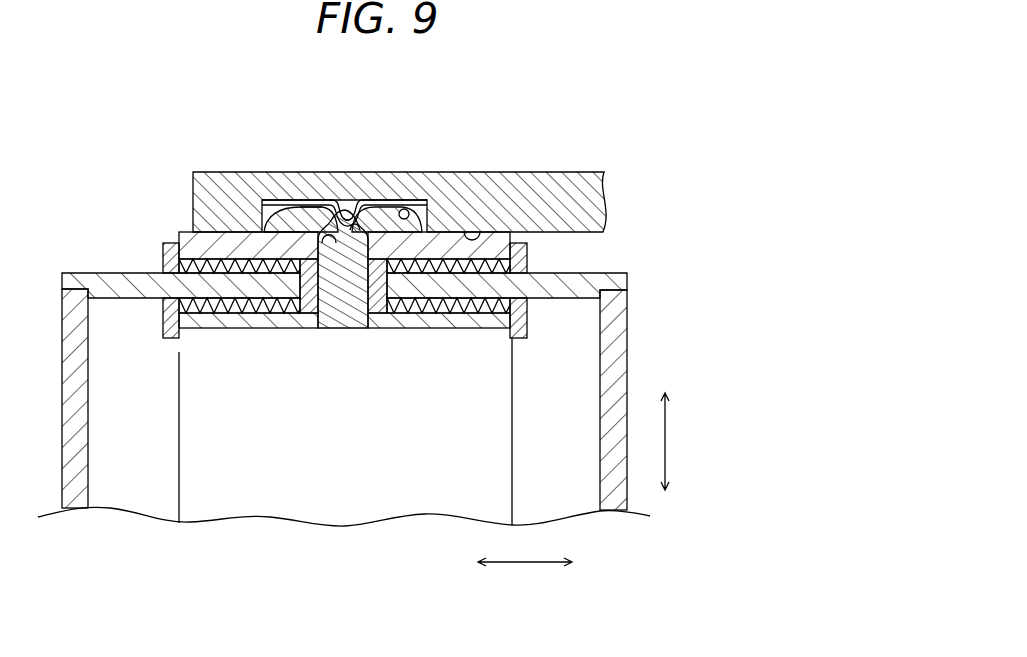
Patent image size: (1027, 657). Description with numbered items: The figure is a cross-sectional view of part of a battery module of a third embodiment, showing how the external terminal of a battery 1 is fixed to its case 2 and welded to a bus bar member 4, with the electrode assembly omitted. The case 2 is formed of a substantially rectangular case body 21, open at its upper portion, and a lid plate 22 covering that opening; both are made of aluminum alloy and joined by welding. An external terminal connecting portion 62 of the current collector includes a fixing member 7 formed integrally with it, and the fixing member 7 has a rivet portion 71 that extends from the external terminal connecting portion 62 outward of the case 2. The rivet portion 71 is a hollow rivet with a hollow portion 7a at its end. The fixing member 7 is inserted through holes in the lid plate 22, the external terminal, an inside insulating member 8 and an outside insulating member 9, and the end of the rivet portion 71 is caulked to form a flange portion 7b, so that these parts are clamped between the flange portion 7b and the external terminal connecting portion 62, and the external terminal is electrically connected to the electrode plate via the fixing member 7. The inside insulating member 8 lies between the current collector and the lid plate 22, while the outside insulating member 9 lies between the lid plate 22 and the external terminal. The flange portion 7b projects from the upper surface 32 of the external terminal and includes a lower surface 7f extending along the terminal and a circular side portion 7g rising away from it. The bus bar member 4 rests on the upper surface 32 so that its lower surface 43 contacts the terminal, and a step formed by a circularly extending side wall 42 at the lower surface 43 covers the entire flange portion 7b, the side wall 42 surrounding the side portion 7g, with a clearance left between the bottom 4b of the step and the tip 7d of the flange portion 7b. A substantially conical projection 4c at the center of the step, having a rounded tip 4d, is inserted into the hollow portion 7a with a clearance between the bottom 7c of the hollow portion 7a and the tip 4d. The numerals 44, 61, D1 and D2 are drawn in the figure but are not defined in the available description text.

The battery 1 is at (56, 238).
The case 2 is at (718, 280).
The case body 21 is at (620, 327).
The lid plate 22 is at (618, 283).
The upper surface of the external terminal 32 is at (190, 232).
The bus bar member 4 is at (548, 88).
The bottom of the step 4b is at (414, 207).
The projection 4c is at (340, 201).
The tip of the projection 4d is at (384, 204).
The side wall 42 is at (424, 224).
The lower surface of the bus bar member 43 is at (486, 238).
The upper block 44 is at (514, 200).
The fixing member 7 is at (344, 345).
The hollow portion 7a is at (354, 232).
The flange portion 7b is at (282, 222).
The bottom of the hollow portion 7c is at (328, 242).
The tip of the flange portion 7d is at (313, 207).
The lower surface of the flange portion 7f is at (270, 246).
The side portion of the flange portion 7g is at (283, 232).
The rivet portion 71 is at (303, 125).
The inside insulating member 8 is at (514, 338).
The outside insulating member 9 is at (527, 258).
The cylindrical portion 61 is at (268, 486).
The external terminal connecting portion 62 is at (447, 328).
The dimension D1 is at (525, 574).
The dimension D2 is at (678, 441).